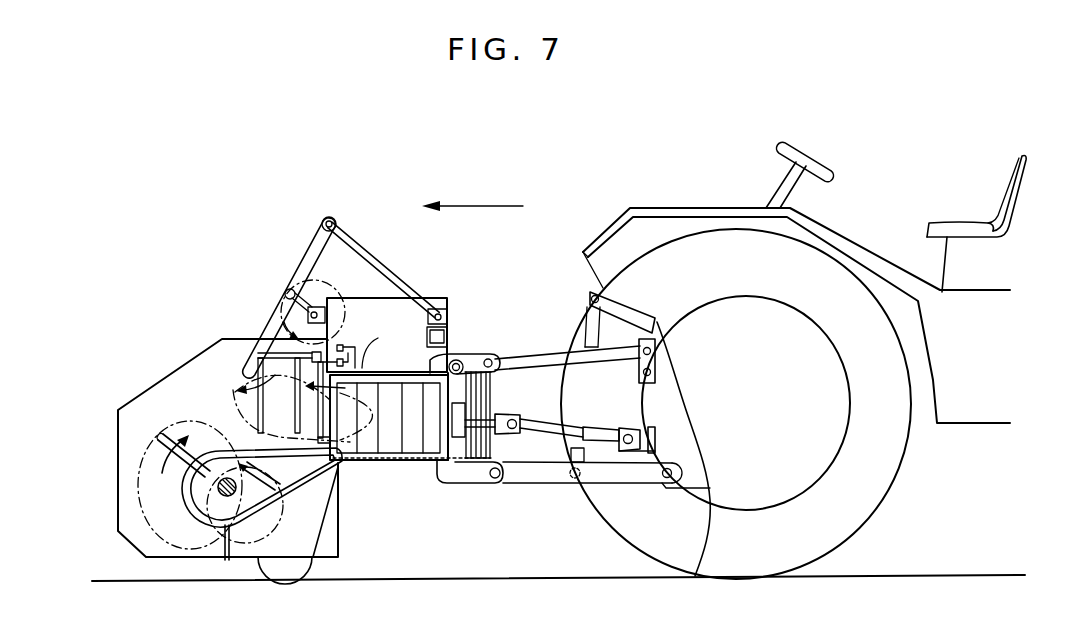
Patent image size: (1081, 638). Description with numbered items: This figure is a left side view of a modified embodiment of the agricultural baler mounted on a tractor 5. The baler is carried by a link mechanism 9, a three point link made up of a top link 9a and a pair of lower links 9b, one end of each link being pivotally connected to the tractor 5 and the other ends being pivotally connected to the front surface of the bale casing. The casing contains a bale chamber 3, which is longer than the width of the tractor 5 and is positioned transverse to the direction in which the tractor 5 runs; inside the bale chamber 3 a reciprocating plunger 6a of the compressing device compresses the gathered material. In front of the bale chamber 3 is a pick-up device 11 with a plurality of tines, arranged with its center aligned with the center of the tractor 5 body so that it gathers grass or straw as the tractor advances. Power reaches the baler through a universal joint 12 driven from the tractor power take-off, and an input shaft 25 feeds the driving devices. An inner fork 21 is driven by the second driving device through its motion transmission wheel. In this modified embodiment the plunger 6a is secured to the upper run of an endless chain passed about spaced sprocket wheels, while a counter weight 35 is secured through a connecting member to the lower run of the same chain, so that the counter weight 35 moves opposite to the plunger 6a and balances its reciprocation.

The bale chamber 3 is at (370, 462).
The tractor 5 is at (977, 406).
The plunger 6a is at (432, 443).
The link mechanism 9 is at (602, 364).
The top link 9a is at (526, 359).
The lower links 9b is at (522, 472).
The pick-up device 11 is at (165, 511).
The universal joint 12 is at (594, 438).
The inner fork 21 is at (257, 339).
The input shaft 25 is at (492, 422).
The counter weight 35 is at (301, 415).